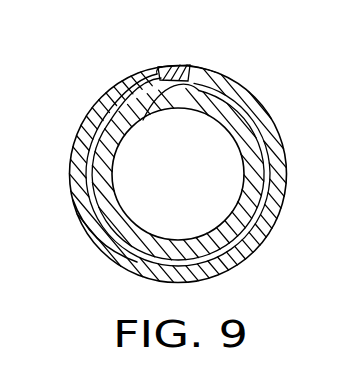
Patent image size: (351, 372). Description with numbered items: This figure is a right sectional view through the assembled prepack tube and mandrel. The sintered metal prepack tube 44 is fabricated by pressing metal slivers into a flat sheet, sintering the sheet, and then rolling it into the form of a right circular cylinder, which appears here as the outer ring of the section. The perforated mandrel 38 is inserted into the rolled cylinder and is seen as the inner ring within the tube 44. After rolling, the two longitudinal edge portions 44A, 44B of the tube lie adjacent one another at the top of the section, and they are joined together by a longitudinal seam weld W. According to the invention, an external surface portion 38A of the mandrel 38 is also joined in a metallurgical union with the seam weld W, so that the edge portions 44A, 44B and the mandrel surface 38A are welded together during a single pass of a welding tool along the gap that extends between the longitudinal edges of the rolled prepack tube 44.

The sintered metal prepack tube 44 is at (83, 120).
The longitudinal edge portion 44A is at (160, 70).
The longitudinal edge portion 44B is at (206, 68).
The longitudinal seam weld W is at (178, 67).
The perforated mandrel 38 is at (231, 103).
The external surface portion 38A is at (171, 80).